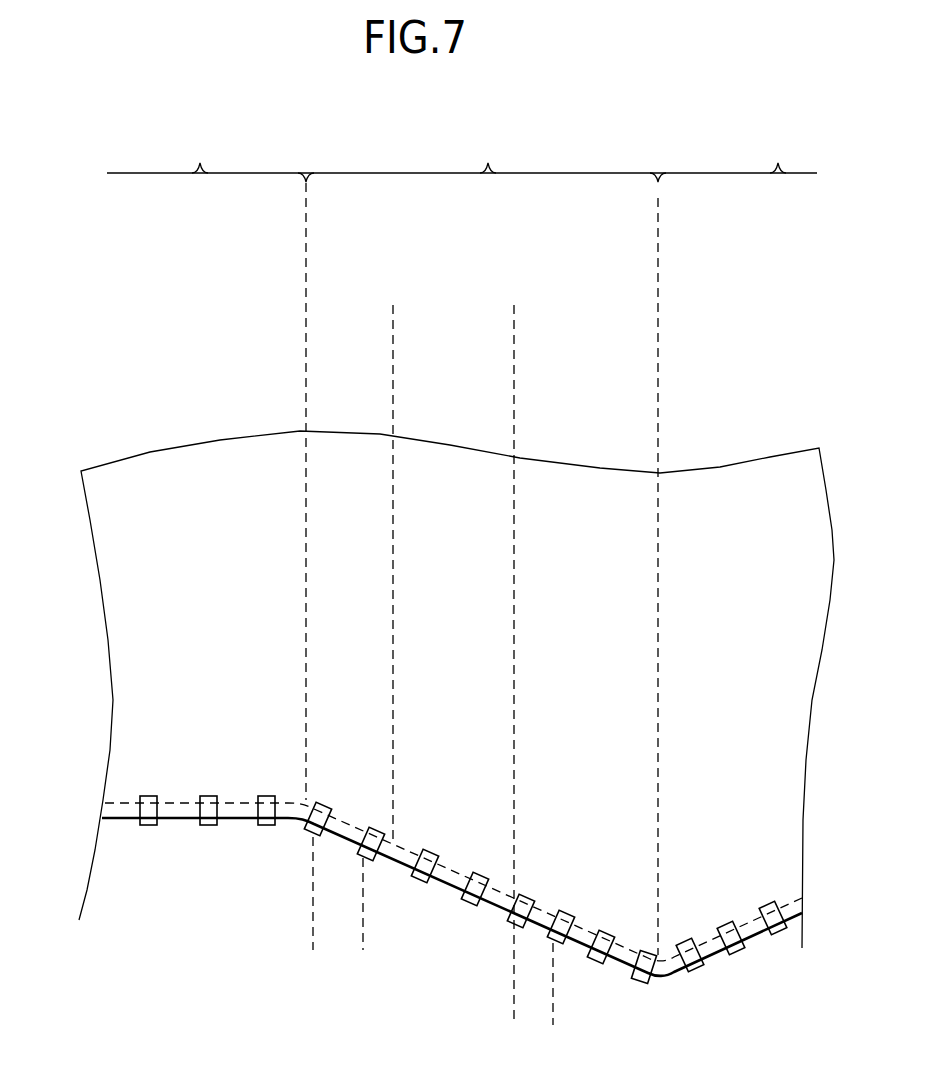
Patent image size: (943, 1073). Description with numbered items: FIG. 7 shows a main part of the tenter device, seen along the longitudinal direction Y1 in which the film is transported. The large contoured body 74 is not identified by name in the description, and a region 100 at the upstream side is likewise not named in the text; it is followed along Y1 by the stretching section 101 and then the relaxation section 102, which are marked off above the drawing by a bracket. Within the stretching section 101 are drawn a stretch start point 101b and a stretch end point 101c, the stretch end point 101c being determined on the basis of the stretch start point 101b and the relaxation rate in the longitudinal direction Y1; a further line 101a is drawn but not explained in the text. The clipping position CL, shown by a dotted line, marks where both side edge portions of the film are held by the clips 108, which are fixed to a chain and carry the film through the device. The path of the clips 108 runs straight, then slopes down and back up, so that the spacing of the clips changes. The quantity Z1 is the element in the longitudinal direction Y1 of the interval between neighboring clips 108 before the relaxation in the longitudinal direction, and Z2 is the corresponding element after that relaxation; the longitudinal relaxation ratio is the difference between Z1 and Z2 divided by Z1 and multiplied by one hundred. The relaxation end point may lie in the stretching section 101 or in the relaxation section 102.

The tire tread / carcass body 74 is at (223, 497).
The first region 100 is at (210, 157).
The stretching section 101 is at (486, 157).
The relaxation section 102 is at (737, 153).
The first boundary line of region 101 101a is at (302, 373).
The stretch start point 101b is at (393, 312).
The stretch end point 101c is at (514, 370).
The clipping position CL is at (136, 792).
The clips 108 is at (207, 825).
The interval element before relaxation Z1 is at (392, 929).
The interval element after relaxation Z2 is at (578, 1007).
The longitudinal direction Y1 is at (250, 996).